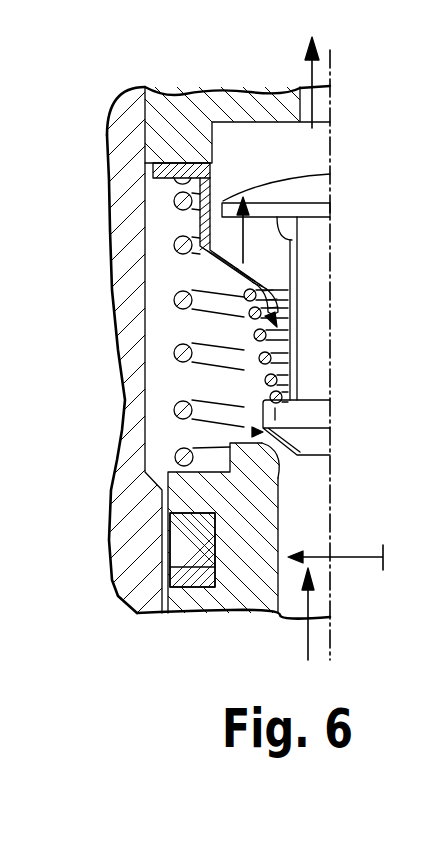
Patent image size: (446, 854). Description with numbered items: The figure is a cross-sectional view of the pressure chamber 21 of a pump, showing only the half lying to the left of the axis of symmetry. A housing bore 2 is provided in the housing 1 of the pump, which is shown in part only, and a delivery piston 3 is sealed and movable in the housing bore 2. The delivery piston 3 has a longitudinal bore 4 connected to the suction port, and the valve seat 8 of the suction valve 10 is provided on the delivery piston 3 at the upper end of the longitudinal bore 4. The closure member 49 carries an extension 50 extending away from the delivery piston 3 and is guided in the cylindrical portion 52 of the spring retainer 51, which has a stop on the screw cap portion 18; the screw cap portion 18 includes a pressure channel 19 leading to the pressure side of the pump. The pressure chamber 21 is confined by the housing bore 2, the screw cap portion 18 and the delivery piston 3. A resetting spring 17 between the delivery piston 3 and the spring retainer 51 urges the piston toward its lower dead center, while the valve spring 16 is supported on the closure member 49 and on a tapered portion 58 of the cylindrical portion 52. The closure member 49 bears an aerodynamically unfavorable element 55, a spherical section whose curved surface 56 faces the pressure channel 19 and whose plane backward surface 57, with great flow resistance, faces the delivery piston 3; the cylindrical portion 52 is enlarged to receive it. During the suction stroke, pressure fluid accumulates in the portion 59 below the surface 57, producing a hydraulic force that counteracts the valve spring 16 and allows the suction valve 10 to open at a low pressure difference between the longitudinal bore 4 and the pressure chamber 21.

The housing 1 is at (138, 510).
The housing bore 2 is at (166, 573).
The delivery piston 3 is at (228, 592).
The longitudinal bore 4 is at (293, 587).
The valve seat 8 is at (283, 478).
The suction valve 10 is at (255, 432).
The valve spring 16 is at (265, 380).
The resetting spring 17 is at (237, 298).
The screw cap portion 18 is at (247, 120).
The pressure channel 19 is at (330, 105).
The pressure chamber 21 is at (178, 329).
The closure member 49 is at (313, 440).
The extension 50 is at (307, 348).
The spring retainer 51 is at (151, 176).
The cylindrical portion 52 is at (203, 222).
The aerodynamically unfavorable element 55 is at (306, 190).
The curved surface 56 is at (292, 176).
The plane backward surface 57 is at (300, 237).
The tapered portion 58 is at (278, 287).
The portion 59 is at (283, 265).